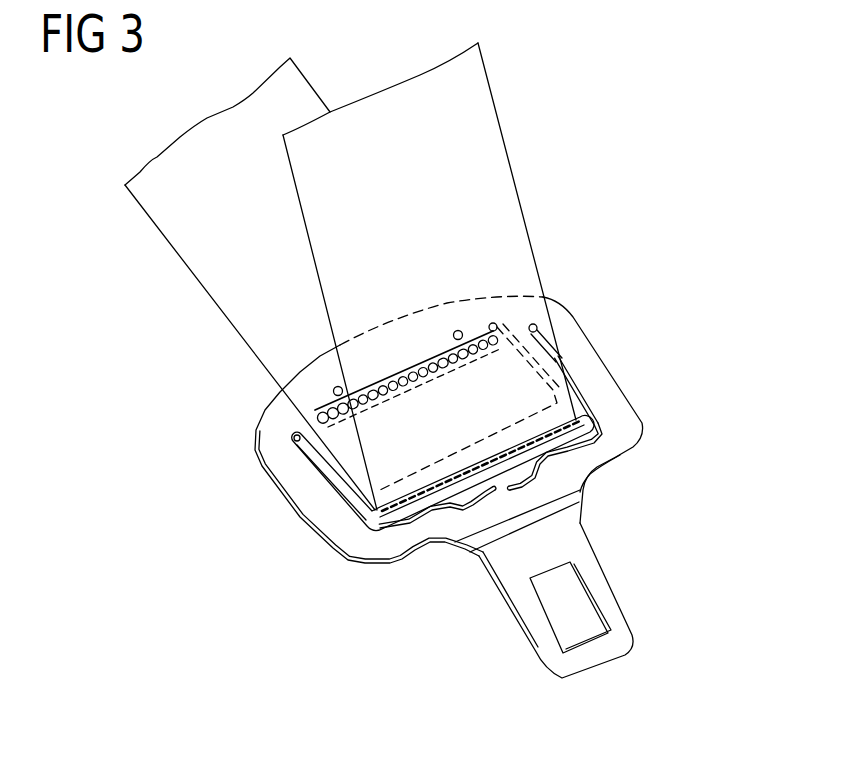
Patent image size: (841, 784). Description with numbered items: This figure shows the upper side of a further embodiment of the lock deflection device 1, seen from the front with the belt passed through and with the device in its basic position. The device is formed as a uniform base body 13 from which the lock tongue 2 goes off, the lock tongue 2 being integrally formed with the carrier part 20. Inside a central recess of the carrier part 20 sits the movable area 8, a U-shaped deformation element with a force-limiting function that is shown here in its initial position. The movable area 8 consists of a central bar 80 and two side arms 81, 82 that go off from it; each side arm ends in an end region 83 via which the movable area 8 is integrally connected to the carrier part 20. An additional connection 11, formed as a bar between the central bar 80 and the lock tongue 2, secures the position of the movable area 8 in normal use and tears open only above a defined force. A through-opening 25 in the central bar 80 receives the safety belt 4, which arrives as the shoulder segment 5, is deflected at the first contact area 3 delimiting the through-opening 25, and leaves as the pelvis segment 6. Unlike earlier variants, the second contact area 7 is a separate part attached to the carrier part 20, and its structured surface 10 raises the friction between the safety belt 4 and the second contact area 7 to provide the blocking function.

The lock deflection device 1 is at (625, 590).
The lock tongue 2 is at (588, 653).
The first contact area 3 is at (408, 520).
The safety belt 4 is at (475, 143).
The shoulder segment 5 is at (508, 253).
The pelvis segment 6 is at (223, 283).
The second contact area 7 is at (337, 510).
The movable area 8 is at (317, 470).
The surface 10 is at (447, 383).
The connection 11 is at (503, 497).
The base body 13 is at (612, 335).
The carrier part 20 is at (602, 373).
The through-opening 25 is at (370, 537).
The central bar 80 is at (438, 473).
The side arm 81 is at (545, 367).
The side arm 82 is at (335, 463).
The end region 83 is at (297, 445).